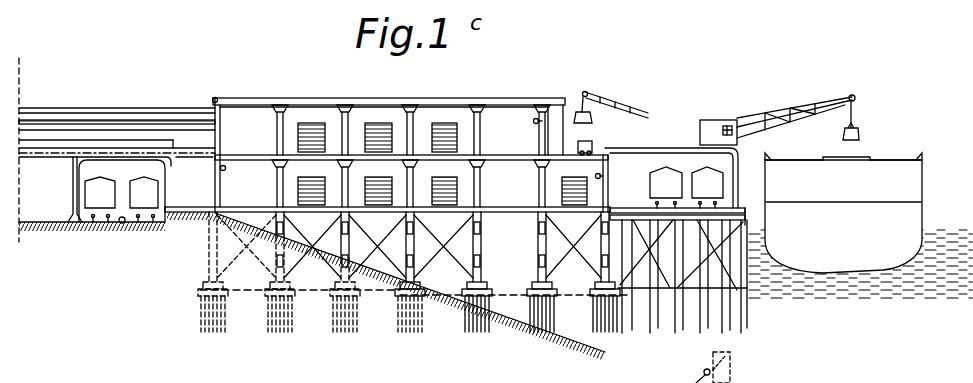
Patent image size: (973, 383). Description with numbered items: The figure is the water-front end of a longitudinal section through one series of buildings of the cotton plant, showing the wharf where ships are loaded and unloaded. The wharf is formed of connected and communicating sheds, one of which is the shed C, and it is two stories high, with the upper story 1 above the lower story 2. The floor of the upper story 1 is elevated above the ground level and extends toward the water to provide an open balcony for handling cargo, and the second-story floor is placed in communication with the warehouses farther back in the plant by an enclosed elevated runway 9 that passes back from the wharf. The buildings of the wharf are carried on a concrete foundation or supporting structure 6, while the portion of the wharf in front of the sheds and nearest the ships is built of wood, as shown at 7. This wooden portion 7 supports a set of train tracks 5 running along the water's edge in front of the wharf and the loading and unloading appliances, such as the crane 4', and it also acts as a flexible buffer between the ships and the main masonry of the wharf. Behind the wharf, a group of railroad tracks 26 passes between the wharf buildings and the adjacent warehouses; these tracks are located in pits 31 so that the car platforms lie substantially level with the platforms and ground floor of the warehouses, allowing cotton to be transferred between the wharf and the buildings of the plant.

The longitudinal runway 9 is at (57, 132).
The group of railroad tracks 26 is at (107, 225).
The pits 31 is at (124, 224).
The shed C is at (292, 100).
The upper story 1 is at (398, 130).
The lower story 2 is at (411, 183).
The concrete foundation 6 is at (414, 286).
The train tracks 5 is at (655, 206).
The crane 4' is at (779, 112).
The wooden portion of the wharf 7 is at (688, 268).